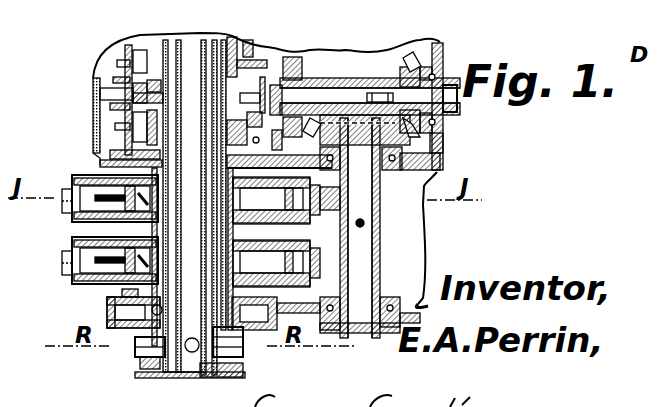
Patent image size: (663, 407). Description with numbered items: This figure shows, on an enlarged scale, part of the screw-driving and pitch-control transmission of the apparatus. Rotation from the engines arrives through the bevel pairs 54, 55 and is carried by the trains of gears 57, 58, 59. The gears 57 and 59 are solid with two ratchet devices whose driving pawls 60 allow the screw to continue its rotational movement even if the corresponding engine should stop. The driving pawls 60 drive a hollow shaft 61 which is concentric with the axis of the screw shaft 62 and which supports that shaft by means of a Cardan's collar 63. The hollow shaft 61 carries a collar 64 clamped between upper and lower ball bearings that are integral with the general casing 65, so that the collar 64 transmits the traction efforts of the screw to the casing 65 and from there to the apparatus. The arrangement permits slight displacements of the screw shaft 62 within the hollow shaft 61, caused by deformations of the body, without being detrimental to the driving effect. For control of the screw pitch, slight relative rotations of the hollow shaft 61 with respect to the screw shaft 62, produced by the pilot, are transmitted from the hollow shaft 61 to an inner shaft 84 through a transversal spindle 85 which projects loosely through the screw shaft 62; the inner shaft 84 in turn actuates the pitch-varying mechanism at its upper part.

The inner shaft 84 is at (185, 68).
The general casing 65 is at (303, 57).
The bevel pair 55 is at (310, 133).
The bevel pair 54 is at (402, 56).
The collar 64 is at (133, 92).
The driving pawl 60 is at (97, 190).
The gear 59 is at (67, 210).
The gear 57 is at (66, 273).
The hollow shaft 61 is at (143, 330).
The transversal spindle 85 is at (193, 352).
The screw shaft 62 is at (205, 380).
The Cardan's collar 63 is at (240, 335).
The gear 58 is at (423, 215).